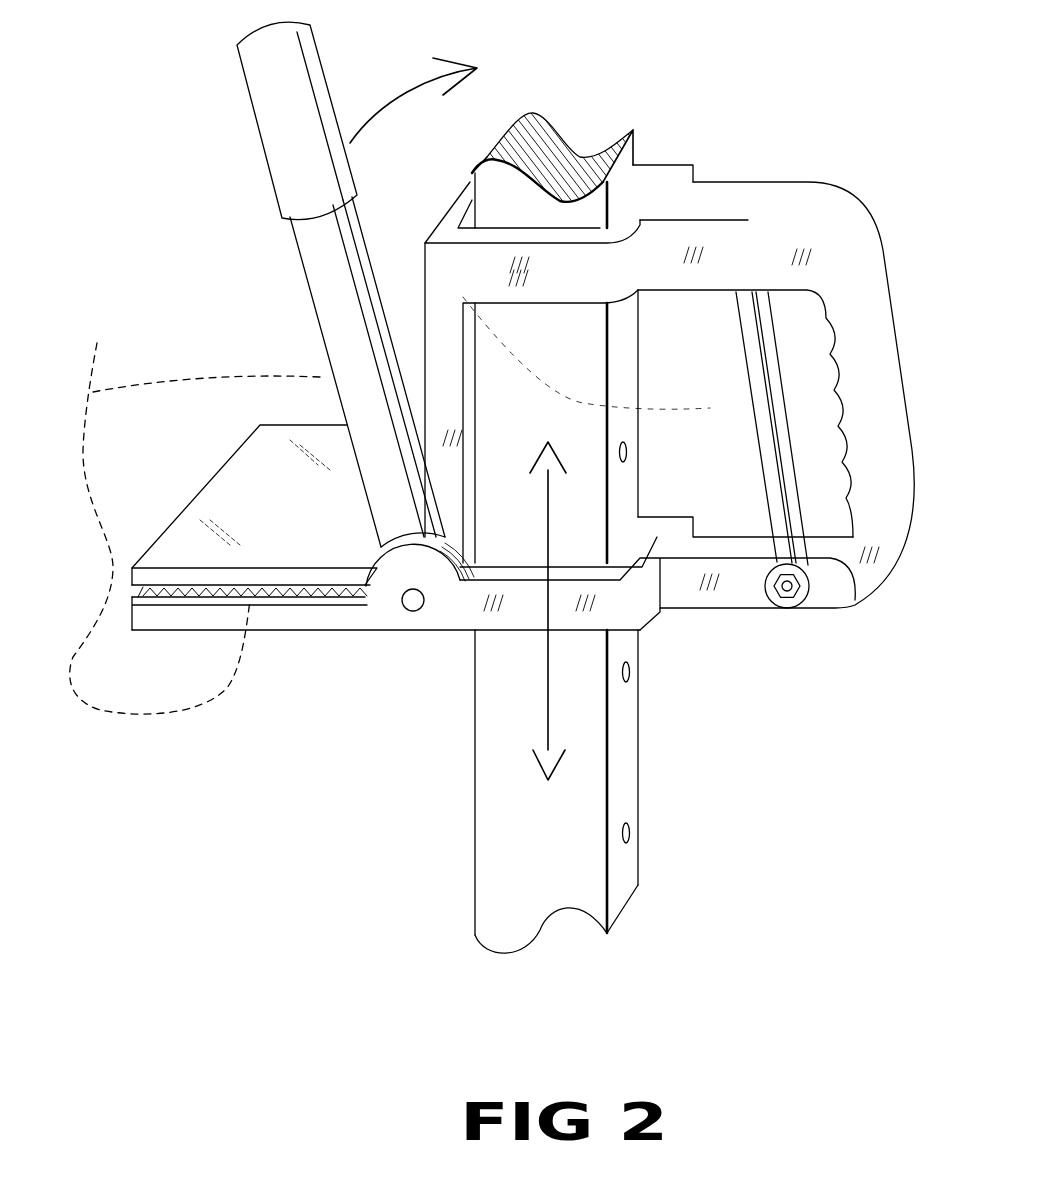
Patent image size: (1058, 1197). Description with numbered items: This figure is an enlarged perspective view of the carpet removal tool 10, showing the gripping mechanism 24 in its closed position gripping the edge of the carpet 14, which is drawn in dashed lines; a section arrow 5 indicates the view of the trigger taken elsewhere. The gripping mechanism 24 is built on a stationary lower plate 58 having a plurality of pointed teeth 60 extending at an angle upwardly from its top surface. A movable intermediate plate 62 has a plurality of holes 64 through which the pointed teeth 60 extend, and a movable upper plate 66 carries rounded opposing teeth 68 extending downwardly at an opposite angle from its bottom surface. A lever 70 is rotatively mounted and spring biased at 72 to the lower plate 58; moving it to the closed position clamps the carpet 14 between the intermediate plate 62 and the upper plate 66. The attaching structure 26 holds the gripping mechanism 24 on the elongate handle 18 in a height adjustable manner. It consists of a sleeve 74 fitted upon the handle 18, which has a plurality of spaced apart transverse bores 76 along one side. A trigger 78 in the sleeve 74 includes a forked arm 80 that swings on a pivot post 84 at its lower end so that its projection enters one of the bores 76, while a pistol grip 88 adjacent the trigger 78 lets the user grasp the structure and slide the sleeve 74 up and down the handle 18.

The section view indicator 5 is at (744, 96).
The carpet removal tool 10 is at (138, 215).
The carpet 14 is at (386, 505).
The elongate handle 18 is at (490, 868).
The gripping mechanism 24 is at (348, 640).
The attaching structure 26 is at (660, 150).
The stationary lower plate 58 is at (283, 626).
The pointed teeth 60 is at (287, 587).
The movable intermediate plate 62 is at (147, 590).
The holes 64 is at (313, 587).
The movable upper plate 66 is at (227, 483).
The rounded opposing teeth 68 is at (177, 593).
The lever 70 is at (273, 143).
The spring biased mounting 72 is at (412, 604).
The sleeve 74 is at (648, 605).
The transverse bores 76 is at (633, 828).
The trigger 78 is at (750, 495).
The forked arm 80 is at (760, 443).
The pivot post 84 is at (783, 596).
The pistol grip 88 is at (872, 358).